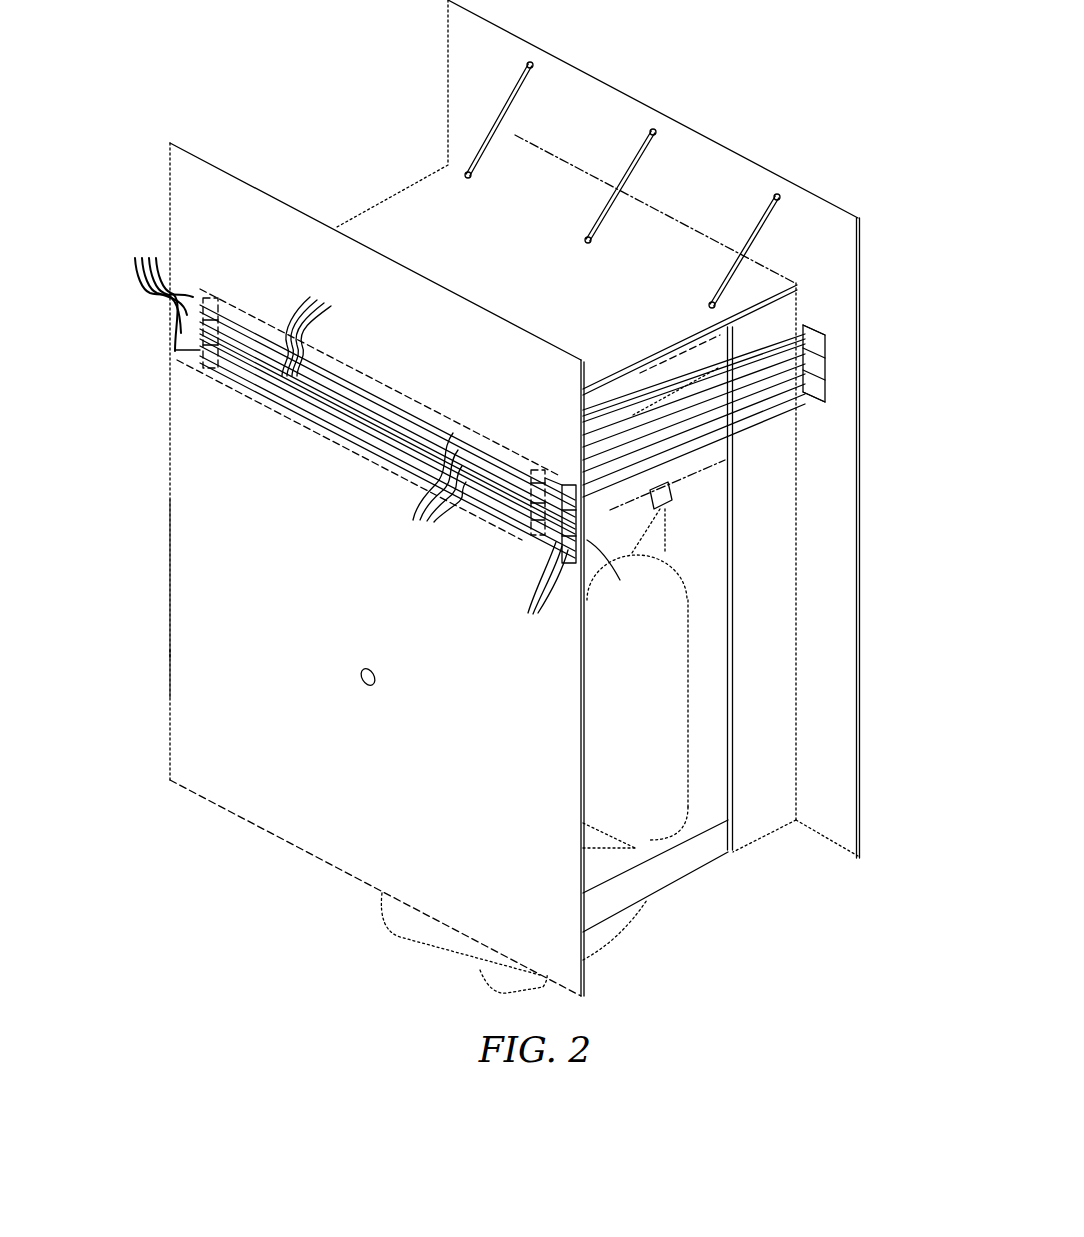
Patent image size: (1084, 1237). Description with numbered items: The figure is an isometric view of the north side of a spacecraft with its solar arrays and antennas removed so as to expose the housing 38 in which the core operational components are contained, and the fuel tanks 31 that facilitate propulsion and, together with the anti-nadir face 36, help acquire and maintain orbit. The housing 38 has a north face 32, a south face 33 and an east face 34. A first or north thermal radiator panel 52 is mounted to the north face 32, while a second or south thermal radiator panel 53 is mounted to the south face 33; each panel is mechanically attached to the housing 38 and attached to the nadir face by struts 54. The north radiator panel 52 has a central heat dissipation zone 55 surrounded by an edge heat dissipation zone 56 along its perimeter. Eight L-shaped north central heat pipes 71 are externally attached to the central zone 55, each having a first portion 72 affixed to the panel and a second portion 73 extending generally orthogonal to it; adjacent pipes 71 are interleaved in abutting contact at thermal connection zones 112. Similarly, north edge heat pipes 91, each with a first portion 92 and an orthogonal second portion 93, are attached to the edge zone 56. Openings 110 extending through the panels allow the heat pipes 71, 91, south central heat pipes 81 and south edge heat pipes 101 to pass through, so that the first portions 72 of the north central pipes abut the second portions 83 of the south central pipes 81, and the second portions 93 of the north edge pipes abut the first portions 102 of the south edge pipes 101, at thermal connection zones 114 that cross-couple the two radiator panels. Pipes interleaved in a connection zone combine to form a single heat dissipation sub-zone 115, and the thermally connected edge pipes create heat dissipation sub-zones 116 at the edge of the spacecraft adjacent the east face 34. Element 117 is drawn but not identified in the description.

The fuel tanks 31 is at (677, 720).
The north face 32 is at (222, 646).
The south face 33 is at (760, 127).
The east face 34 is at (732, 877).
The anti-nadir face 36 is at (430, 940).
The housing 38 is at (783, 613).
The north thermal radiator panel 52 is at (193, 703).
The south thermal radiator panel 53 is at (673, 118).
The struts 54 is at (517, 101).
The central heat dissipation zone 55 is at (369, 654).
The edge heat dissipation zone 56 is at (182, 232).
The north central heat pipe 71 is at (374, 417).
The first portion 72 is at (323, 358).
The second portion 73 is at (355, 378).
The south central heat pipe 81 is at (800, 337).
The second portion 83 is at (722, 392).
The north edge heat pipe 91 is at (350, 437).
The first portion 92 is at (540, 542).
The second portion 93 is at (665, 498).
The south edge heat pipe 101 is at (802, 403).
The first portion 102 is at (730, 457).
The openings 110 is at (215, 298).
The thermal connection zone 112 is at (390, 393).
The thermal connection zone 114 is at (710, 473).
The heat dissipation sub-zone 115 is at (283, 413).
The heat dissipation sub-zone 116 is at (175, 350).
The connector 117 is at (565, 480).